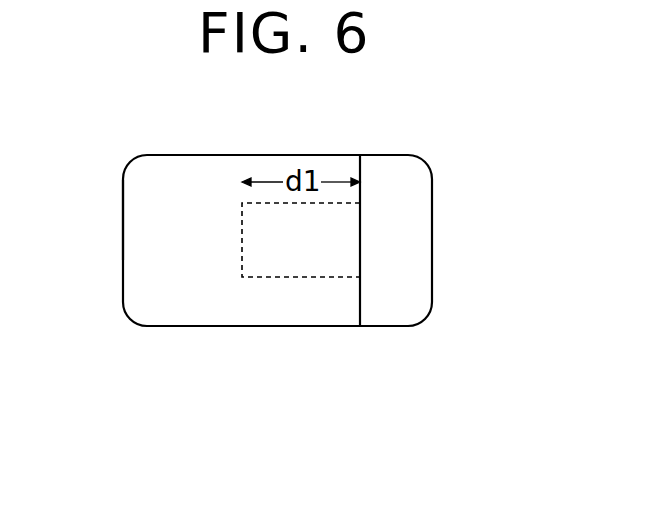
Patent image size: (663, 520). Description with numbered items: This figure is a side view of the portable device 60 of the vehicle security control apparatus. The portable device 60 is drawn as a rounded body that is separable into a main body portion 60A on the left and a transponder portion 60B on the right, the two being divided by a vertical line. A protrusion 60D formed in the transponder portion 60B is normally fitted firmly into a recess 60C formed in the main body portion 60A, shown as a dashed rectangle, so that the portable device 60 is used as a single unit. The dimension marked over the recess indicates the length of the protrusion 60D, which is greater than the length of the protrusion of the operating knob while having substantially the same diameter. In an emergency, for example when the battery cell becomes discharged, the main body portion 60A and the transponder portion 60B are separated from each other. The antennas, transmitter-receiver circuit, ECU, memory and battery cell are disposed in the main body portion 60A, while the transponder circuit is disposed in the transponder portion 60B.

The portable device 60 is at (281, 155).
The main body portion 60A is at (138, 258).
The transponder portion 60B is at (425, 281).
The recess 60C is at (242, 247).
The protrusion 60D is at (348, 247).